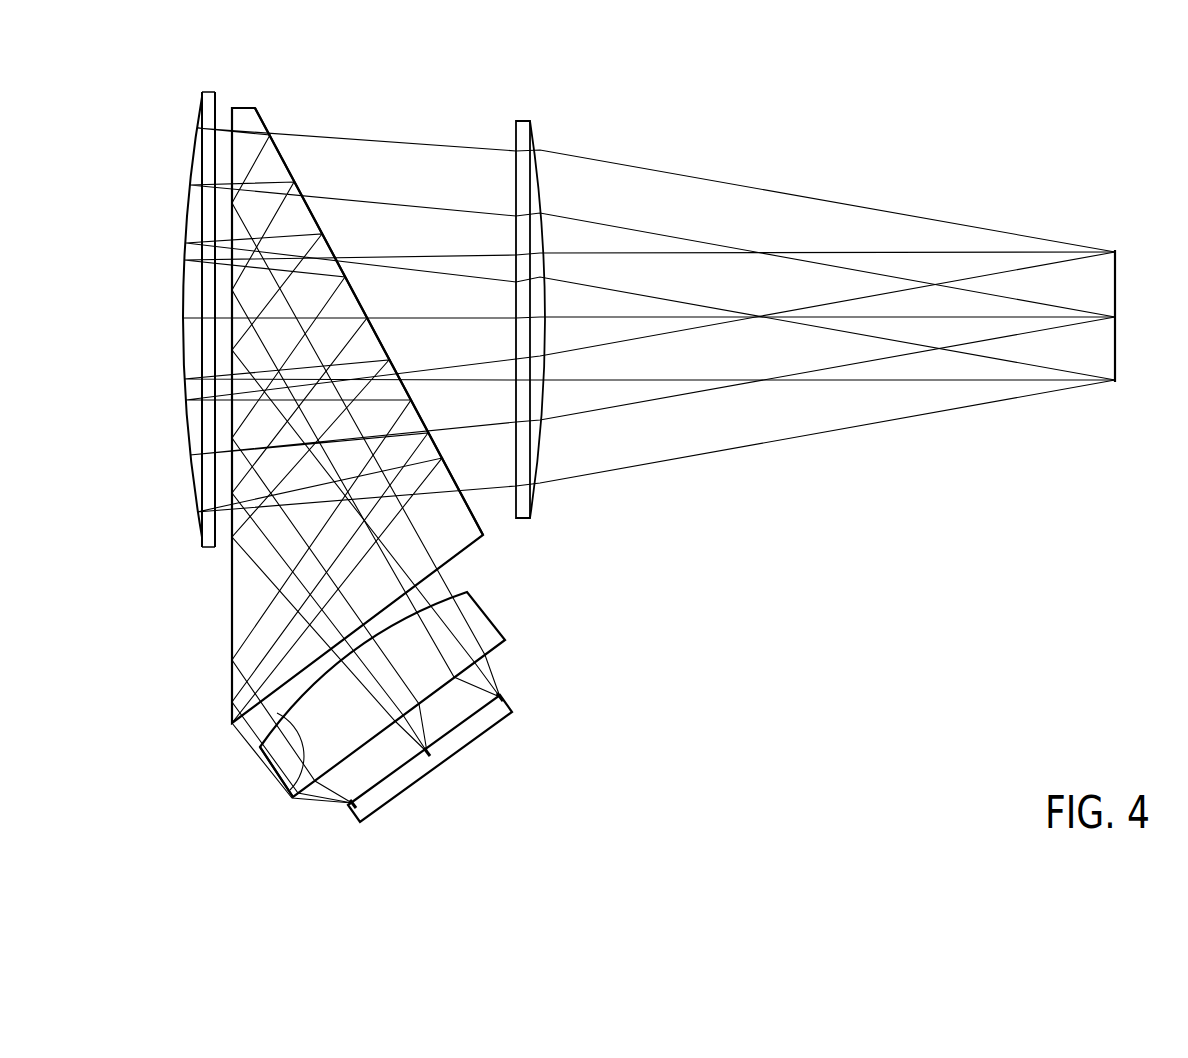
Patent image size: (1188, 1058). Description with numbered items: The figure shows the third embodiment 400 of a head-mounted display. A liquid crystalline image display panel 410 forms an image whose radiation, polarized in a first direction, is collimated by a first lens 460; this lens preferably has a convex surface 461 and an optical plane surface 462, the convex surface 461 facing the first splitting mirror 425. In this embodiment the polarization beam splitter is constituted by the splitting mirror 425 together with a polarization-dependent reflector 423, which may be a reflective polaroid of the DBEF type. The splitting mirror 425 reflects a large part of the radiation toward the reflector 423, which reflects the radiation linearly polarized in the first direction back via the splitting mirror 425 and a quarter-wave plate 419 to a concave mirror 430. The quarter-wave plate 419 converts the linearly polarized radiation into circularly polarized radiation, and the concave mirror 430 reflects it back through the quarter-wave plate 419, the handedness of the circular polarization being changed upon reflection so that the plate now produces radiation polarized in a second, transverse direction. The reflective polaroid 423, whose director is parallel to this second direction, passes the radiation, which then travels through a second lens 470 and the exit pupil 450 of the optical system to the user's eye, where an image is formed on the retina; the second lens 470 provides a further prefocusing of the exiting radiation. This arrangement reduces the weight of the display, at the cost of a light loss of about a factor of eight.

The third embodiment of the head-mounted display 400 is at (762, 128).
The liquid crystalline image display panel 410 is at (467, 743).
The λ/4 plate 419 is at (215, 102).
The polarization-dependent reflector 423 is at (277, 148).
The first splitting mirror 425 is at (231, 612).
The concave mirror 430 is at (185, 486).
The exit pupil 450 is at (1117, 286).
The first lens 460 is at (281, 776).
The convex surface 461 is at (277, 713).
The optical plane surface 462 is at (290, 790).
The second lens 470 is at (531, 128).